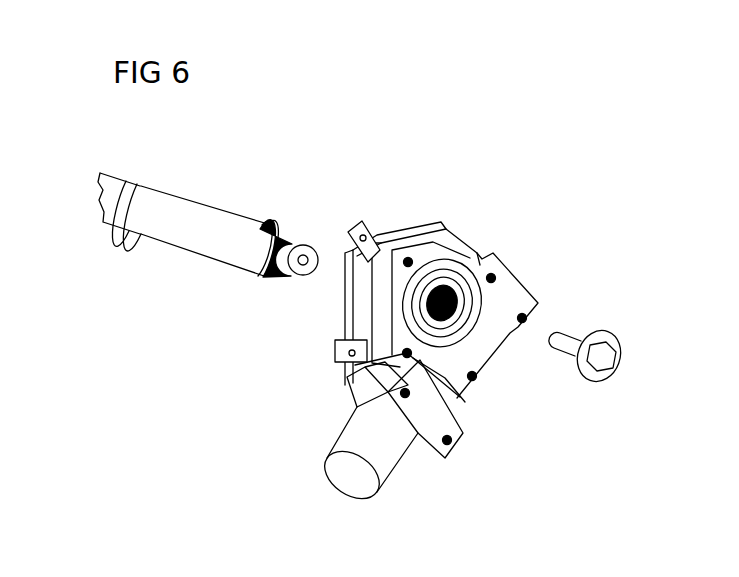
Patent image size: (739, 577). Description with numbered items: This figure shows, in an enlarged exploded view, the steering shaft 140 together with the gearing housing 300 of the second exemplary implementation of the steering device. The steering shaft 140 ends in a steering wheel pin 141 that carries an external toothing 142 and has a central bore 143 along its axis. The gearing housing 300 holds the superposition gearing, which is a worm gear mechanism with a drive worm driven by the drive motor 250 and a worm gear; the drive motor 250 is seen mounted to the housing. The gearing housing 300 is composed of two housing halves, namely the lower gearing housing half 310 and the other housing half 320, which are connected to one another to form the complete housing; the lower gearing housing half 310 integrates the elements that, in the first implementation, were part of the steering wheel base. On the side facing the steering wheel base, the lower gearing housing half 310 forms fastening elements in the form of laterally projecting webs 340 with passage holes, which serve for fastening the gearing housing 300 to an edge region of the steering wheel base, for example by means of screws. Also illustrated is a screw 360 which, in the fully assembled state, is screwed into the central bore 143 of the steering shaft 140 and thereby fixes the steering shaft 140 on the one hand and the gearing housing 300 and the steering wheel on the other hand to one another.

The steering shaft 140 is at (123, 197).
The steering wheel pin 141 is at (200, 197).
The external toothing 142 is at (292, 232).
The central bore 143 is at (298, 280).
The drive motor 250 is at (390, 463).
The gearing housing 300 is at (493, 233).
The lower gearing housing half 310 is at (418, 242).
The housing half 320 is at (483, 343).
The laterally projecting webs 340 is at (368, 248).
The screw 360 is at (607, 363).